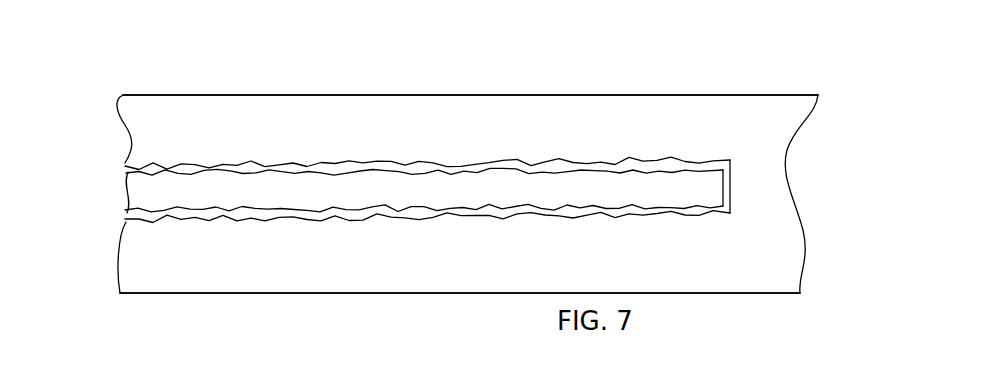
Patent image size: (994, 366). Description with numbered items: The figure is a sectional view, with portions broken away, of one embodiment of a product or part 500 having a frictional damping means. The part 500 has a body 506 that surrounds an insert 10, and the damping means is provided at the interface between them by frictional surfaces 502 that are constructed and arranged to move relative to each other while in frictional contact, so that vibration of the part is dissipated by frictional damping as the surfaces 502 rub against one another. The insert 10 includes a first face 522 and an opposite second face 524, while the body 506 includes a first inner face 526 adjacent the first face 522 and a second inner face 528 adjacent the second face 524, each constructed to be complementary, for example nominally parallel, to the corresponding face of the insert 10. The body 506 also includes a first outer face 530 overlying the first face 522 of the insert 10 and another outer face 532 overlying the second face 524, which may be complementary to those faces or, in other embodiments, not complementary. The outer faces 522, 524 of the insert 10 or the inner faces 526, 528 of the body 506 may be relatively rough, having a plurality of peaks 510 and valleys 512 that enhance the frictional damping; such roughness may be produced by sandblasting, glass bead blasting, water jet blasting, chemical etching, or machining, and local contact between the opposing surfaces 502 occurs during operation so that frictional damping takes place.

The product or part 500 is at (835, 61).
The frictional surfaces 502 is at (469, 179).
The body 506 is at (140, 103).
The peaks 510 is at (427, 249).
The valleys 512 is at (427, 117).
The first face 522 is at (392, 165).
The second face 524 is at (352, 213).
The first inner face 526 is at (268, 165).
The second inner face 528 is at (298, 222).
The first outer face 530 is at (469, 95).
The first outer face 532 is at (525, 293).
The insert 10 is at (703, 192).